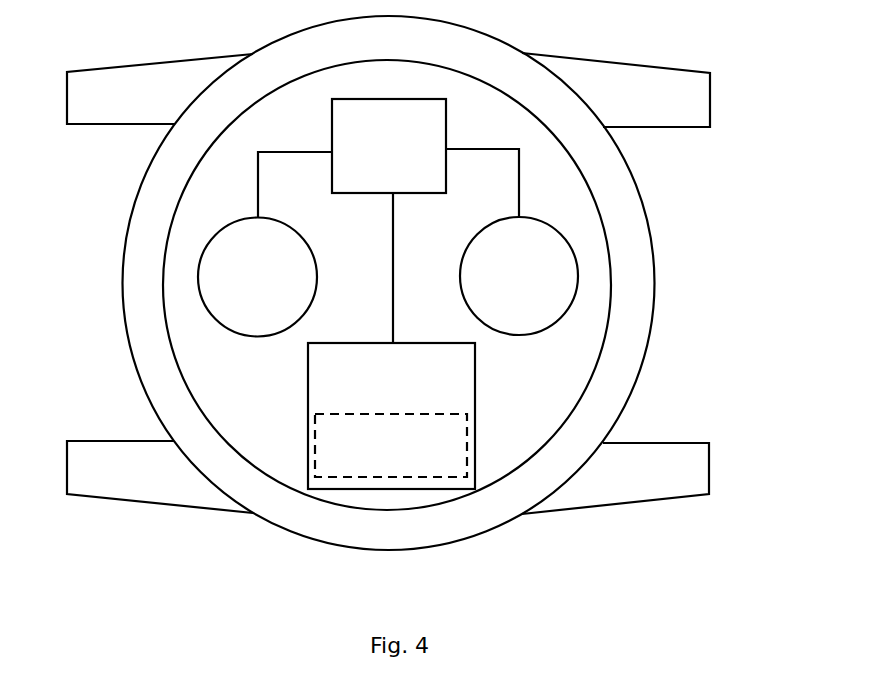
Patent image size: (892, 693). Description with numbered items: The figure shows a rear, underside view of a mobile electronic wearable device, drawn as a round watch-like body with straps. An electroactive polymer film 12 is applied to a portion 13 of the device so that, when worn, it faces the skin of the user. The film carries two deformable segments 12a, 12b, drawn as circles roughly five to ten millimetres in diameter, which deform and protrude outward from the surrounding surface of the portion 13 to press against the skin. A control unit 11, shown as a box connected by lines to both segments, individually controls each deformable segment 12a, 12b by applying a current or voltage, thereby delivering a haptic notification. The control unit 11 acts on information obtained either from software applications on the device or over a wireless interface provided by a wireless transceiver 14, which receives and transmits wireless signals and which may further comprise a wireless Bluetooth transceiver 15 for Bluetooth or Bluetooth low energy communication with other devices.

The control unit 11 is at (388, 221).
The electroactive polymer film 12 is at (397, 278).
The deformable segment 12a is at (262, 281).
The deformable segment 12b is at (533, 243).
The portion of the mobile electronic wearable device 13 is at (528, 393).
The wireless transceiver 14 is at (391, 416).
The wireless Bluetooth transceiver 15 is at (391, 445).